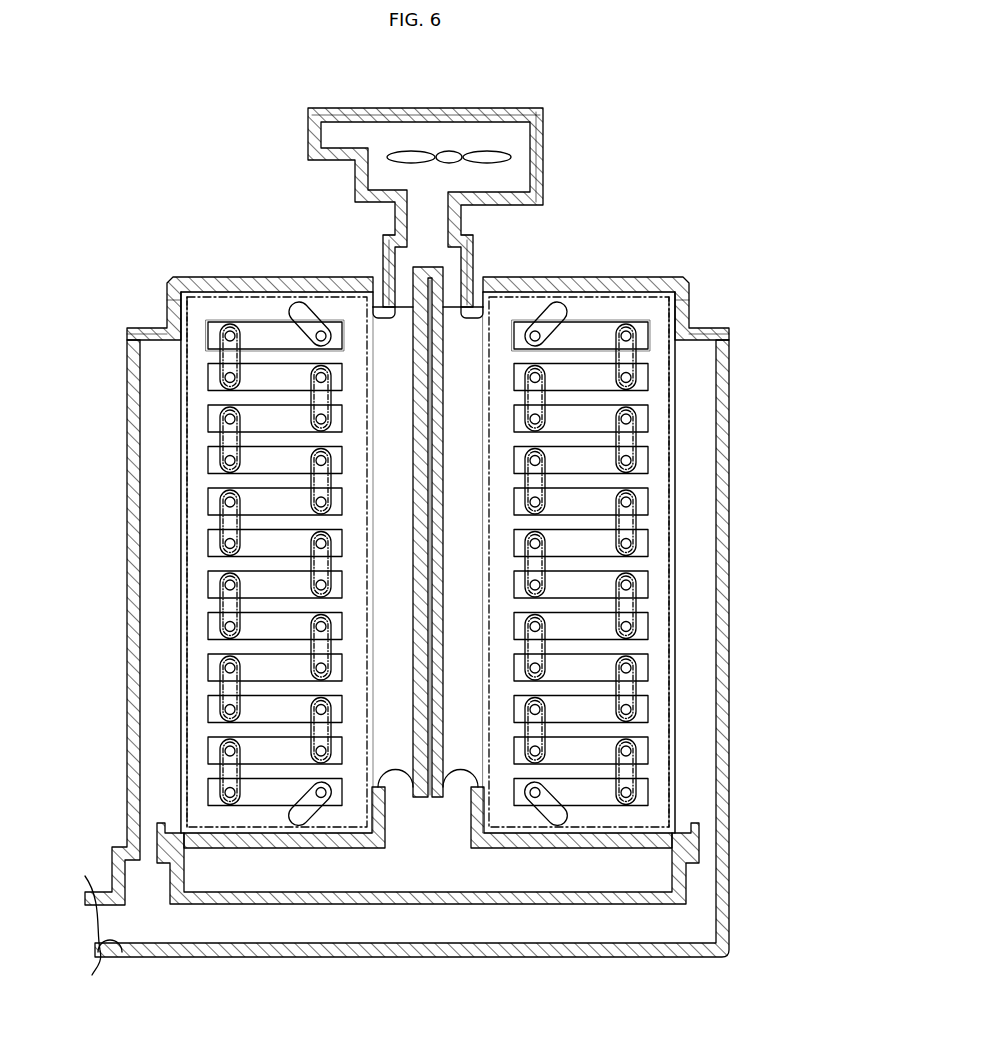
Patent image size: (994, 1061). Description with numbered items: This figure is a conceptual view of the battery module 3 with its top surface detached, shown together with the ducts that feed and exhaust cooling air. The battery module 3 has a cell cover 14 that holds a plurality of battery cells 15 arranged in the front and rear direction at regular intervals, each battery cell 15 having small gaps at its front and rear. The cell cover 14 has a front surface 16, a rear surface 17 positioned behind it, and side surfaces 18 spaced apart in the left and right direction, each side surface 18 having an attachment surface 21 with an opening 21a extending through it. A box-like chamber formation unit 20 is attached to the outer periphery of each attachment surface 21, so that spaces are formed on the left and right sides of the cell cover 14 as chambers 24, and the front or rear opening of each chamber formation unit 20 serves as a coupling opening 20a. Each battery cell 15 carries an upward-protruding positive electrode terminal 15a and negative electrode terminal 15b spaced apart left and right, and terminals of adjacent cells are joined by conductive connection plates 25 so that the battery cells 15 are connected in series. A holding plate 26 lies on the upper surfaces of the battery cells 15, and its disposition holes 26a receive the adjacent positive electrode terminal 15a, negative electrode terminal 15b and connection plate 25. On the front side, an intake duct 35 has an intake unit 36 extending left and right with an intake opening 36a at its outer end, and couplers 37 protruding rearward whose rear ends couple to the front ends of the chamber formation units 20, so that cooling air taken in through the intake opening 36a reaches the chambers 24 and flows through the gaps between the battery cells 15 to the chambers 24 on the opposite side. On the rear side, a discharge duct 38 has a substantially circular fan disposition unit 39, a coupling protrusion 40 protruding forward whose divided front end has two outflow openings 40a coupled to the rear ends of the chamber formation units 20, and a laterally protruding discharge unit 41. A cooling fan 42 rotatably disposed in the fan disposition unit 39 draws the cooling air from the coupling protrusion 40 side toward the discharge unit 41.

The battery module 3 is at (177, 276).
The cell cover 14 is at (194, 278).
The battery cell 15 is at (263, 322).
The positive electrode terminal 15a is at (300, 330).
The negative electrode terminal 15b is at (222, 340).
The front surface 16 is at (300, 848).
The rear surface 17 is at (231, 290).
The side surface 18 is at (170, 302).
The chamber formation unit 20 is at (187, 441).
The coupling opening 20a is at (383, 310).
The attachment surface 21 is at (176, 320).
The opening 21a is at (183, 365).
The chamber 24 is at (149, 575).
The connection plate 25 is at (225, 461).
The holding plate 26 is at (188, 416).
The disposition hole 26a is at (228, 546).
The intake duct 35 is at (658, 957).
The intake unit 36 is at (242, 905).
The intake opening 36a is at (110, 952).
The coupler 37 is at (125, 856).
The discharge duct 38 is at (543, 126).
The fan disposition unit 39 is at (543, 158).
The coupling protrusion 40 is at (464, 228).
The outflow opening 40a is at (393, 240).
The discharge unit 41 is at (334, 108).
The cooling fan 42 is at (441, 151).